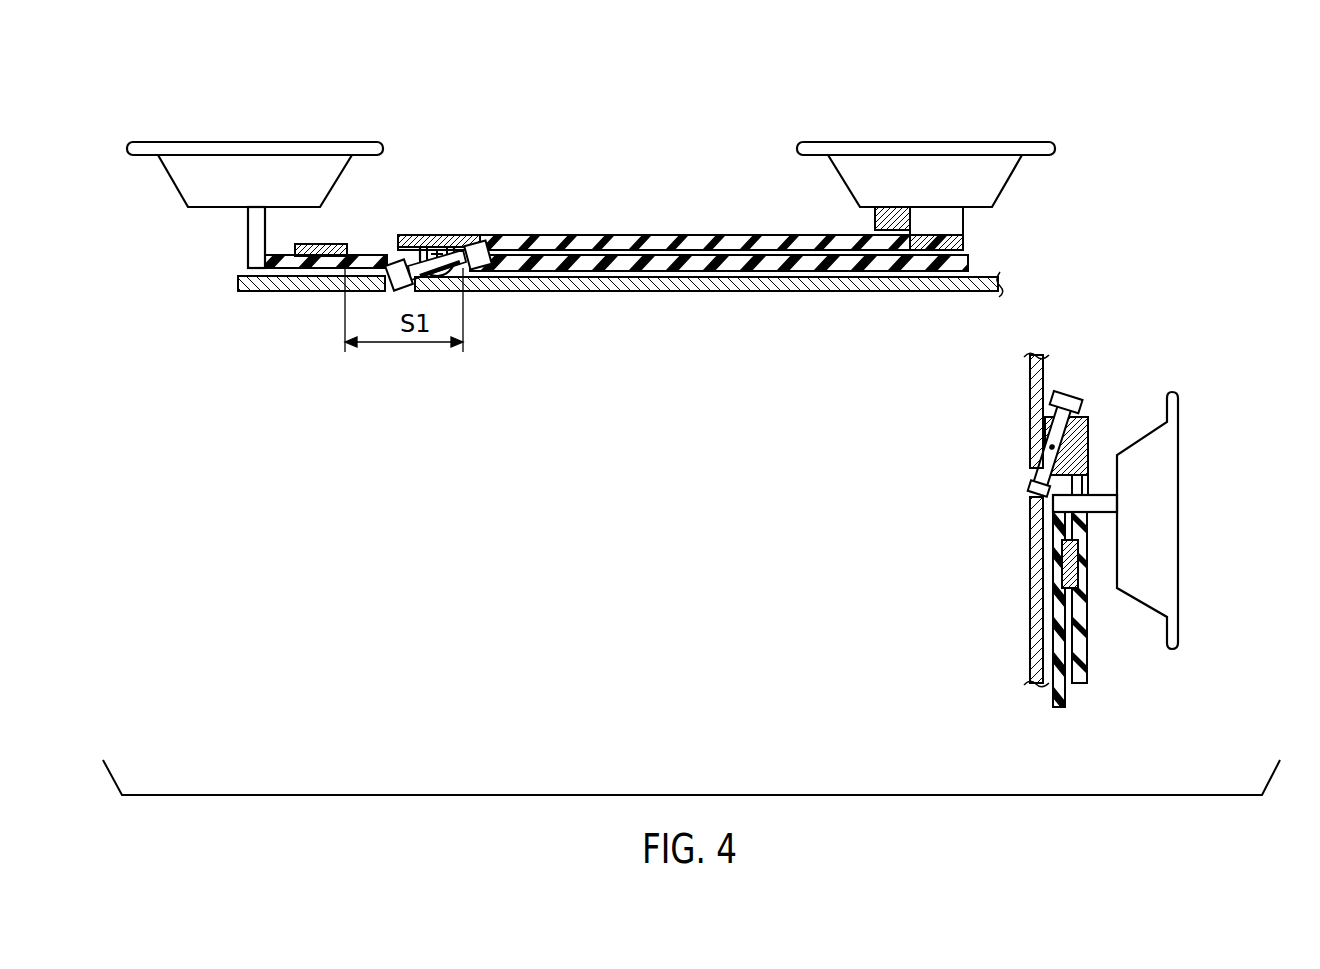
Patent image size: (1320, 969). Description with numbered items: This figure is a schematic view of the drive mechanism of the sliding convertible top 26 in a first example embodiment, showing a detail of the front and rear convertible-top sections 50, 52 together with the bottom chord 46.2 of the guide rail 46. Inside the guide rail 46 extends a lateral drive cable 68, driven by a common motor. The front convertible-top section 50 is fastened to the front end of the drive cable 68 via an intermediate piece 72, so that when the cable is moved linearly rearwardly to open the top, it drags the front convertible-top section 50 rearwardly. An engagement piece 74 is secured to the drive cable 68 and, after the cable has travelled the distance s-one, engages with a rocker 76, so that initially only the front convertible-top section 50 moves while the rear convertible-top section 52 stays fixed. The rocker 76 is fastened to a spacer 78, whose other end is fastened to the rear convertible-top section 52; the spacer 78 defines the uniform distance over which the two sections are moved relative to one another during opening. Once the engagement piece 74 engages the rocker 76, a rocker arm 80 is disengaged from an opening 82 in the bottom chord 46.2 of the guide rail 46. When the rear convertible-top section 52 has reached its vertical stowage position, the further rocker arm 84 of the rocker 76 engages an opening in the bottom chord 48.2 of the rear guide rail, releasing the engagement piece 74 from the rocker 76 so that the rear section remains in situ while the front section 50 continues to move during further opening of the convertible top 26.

The sliding convertible top 26 is at (623, 140).
The guide rail 46 is at (518, 298).
The bottom chord 46.2 is at (620, 286).
The bottom chord 48.2 is at (1030, 613).
The front convertible-top section 50 is at (303, 152).
The rear convertible-top section 52 is at (973, 155).
The drive cable 68 is at (783, 260).
The intermediate piece 72 is at (250, 249).
The engagement piece 74 is at (320, 262).
The rocker 76 is at (479, 236).
The spacer 78 is at (692, 240).
The rocker arm 80 is at (430, 235).
The opening 82 is at (392, 283).
The further rocker arm 84 is at (1042, 481).